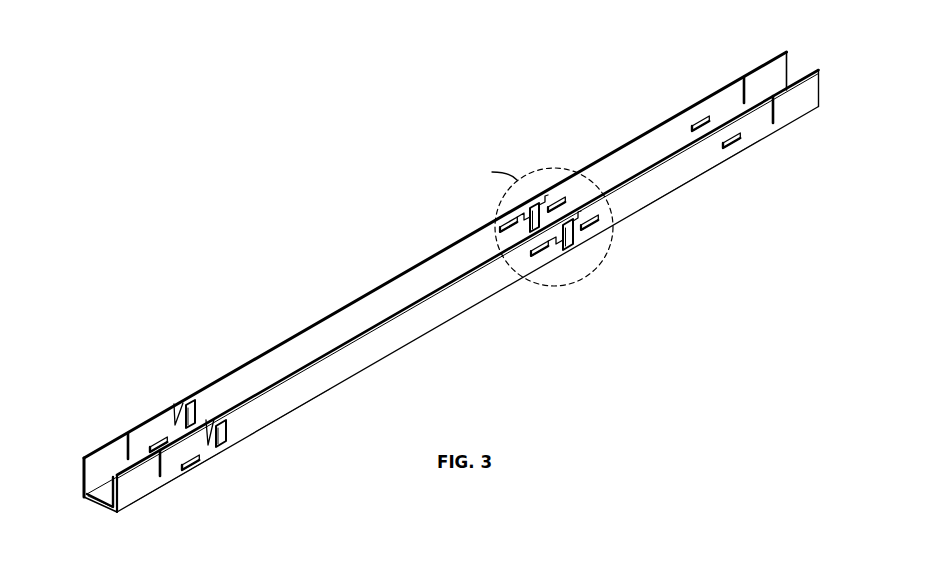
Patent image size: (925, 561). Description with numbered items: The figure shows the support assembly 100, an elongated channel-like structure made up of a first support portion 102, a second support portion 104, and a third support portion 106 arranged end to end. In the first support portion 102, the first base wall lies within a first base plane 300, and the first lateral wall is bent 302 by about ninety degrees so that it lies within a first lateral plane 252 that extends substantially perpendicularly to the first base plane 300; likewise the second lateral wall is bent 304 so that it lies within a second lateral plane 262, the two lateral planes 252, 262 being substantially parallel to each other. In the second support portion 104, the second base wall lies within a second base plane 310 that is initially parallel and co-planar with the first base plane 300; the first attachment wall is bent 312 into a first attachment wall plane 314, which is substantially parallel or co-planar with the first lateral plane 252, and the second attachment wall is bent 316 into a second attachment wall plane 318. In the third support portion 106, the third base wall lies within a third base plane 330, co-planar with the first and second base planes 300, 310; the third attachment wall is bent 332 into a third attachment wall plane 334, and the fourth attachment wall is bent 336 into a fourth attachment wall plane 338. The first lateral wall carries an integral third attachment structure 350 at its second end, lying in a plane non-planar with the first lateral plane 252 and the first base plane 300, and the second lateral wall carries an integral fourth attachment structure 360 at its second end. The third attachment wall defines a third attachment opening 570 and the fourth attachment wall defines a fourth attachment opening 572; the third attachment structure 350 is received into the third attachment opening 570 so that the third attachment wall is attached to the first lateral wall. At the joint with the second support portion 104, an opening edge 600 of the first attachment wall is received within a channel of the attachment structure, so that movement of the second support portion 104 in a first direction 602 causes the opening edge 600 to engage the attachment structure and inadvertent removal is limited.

The support assembly 100 is at (458, 274).
The first support portion 102 is at (348, 280).
The second support portion 104 is at (700, 82).
The third support portion 106 is at (107, 400).
The first lateral plane 252 is at (282, 355).
The second lateral plane 262 is at (423, 328).
The first base plane 300 is at (350, 382).
The bend of the first lateral wall 302 is at (163, 408).
The bend of the second lateral wall 304 is at (282, 428).
The second base plane 310 is at (692, 182).
The bend of the first attachment wall 312 is at (727, 72).
The first attachment wall plane 314 is at (668, 128).
The bend of the second attachment wall 316 is at (828, 93).
The second attachment wall plane 318 is at (723, 155).
The third base plane 330 is at (100, 501).
The bend of the third attachment wall 332 is at (68, 471).
The third attachment wall plane 334 is at (108, 457).
The bend of the fourth attachment wall 336 is at (167, 497).
The fourth attachment wall plane 338 is at (133, 493).
The third attachment structure 350 is at (213, 390).
The fourth attachment structure 360 is at (227, 442).
The third attachment opening 570 is at (162, 438).
The fourth attachment opening 572 is at (203, 462).
The opening edge 600 is at (558, 197).
The first direction 602 is at (597, 207).